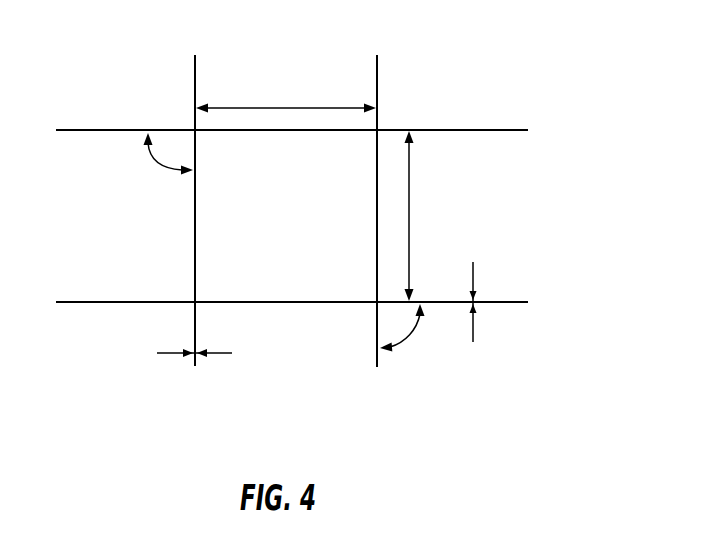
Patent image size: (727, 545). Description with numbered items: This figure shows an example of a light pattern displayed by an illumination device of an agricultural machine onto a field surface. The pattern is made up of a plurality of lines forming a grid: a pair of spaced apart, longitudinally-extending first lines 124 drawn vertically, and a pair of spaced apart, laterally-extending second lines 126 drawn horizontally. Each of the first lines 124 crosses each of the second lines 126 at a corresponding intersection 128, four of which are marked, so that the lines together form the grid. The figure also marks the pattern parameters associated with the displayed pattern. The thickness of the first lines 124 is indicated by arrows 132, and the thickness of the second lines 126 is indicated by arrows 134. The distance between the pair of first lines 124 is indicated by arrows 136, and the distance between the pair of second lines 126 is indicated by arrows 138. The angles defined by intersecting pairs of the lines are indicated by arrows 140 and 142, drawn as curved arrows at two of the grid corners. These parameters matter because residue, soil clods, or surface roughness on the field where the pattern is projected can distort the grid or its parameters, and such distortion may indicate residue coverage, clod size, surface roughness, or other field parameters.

The first lines 124 is at (195, 83).
The second lines 126 is at (94, 130).
The intersection 128 is at (205, 137).
The arrow indicating thickness of first lines 132 is at (163, 356).
The arrow indicating thickness of second lines 134 is at (476, 268).
The arrow indicating distance between first lines 136 is at (278, 108).
The arrow indicating distance between second lines 138 is at (409, 212).
The arrow indicating angle between intersecting lines 140 is at (156, 162).
The arrow indicating angle between intersecting lines 142 is at (417, 348).